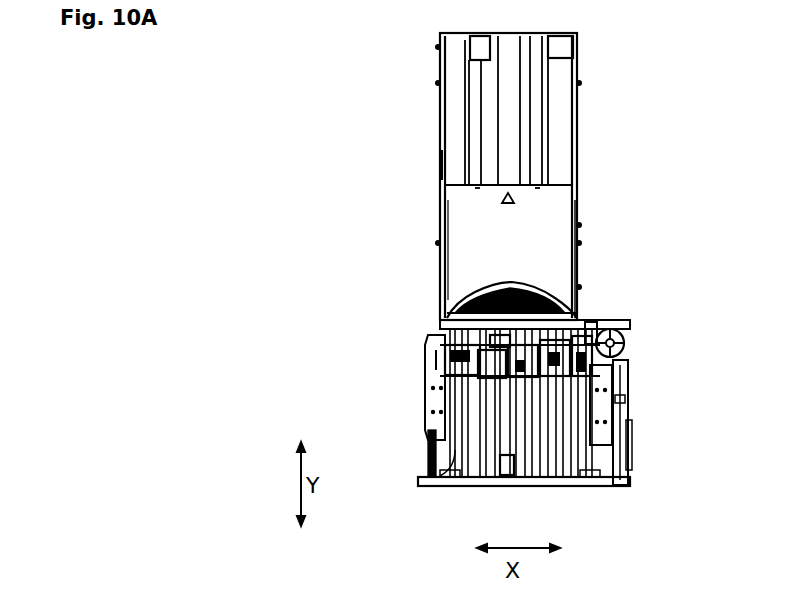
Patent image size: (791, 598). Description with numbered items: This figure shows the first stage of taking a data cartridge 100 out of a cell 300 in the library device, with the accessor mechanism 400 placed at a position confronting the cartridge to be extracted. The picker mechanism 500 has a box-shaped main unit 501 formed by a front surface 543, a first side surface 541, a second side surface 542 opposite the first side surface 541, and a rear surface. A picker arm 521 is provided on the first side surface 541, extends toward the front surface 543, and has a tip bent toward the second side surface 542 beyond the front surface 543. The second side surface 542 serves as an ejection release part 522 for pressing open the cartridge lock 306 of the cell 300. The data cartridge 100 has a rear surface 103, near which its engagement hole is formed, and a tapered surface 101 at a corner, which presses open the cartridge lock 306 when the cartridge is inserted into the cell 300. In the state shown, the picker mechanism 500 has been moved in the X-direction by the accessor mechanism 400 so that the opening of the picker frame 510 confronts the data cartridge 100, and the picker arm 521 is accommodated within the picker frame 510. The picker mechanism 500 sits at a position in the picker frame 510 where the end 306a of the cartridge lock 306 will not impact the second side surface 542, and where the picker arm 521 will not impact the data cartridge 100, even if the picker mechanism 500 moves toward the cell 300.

The cell 300 is at (437, 115).
The tapered surface 101 is at (438, 163).
The data cartridge 100 is at (505, 242).
The rear surface 103 is at (578, 312).
The end of cartridge lock 306a is at (447, 306).
The cartridge lock 306 is at (440, 320).
The ejection release part 522 is at (440, 355).
The second side surface 542 is at (434, 381).
The picker mechanism 500 is at (440, 407).
The accessor mechanism 400 is at (428, 432).
The picker frame 510 is at (446, 482).
The picker arm 521 is at (586, 324).
The front surface 543 is at (622, 323).
The first side surface 541 is at (628, 362).
The main unit 501 is at (643, 405).